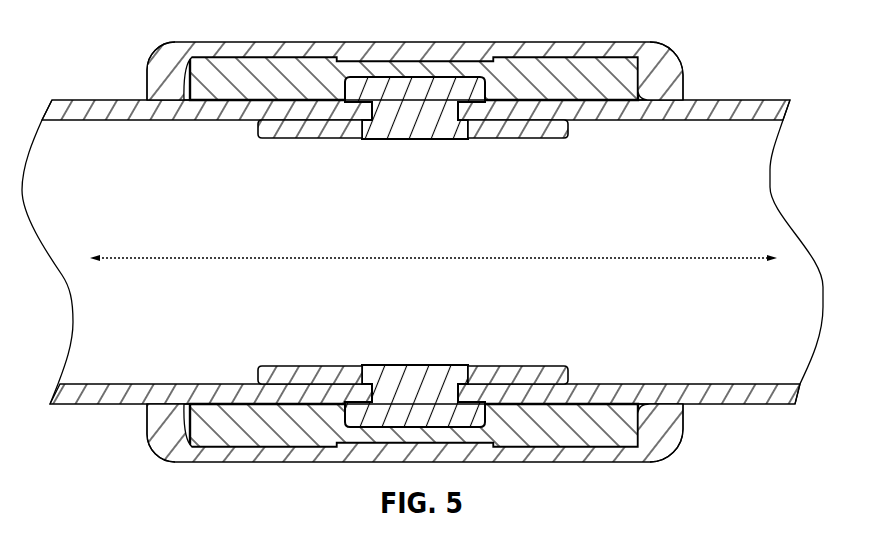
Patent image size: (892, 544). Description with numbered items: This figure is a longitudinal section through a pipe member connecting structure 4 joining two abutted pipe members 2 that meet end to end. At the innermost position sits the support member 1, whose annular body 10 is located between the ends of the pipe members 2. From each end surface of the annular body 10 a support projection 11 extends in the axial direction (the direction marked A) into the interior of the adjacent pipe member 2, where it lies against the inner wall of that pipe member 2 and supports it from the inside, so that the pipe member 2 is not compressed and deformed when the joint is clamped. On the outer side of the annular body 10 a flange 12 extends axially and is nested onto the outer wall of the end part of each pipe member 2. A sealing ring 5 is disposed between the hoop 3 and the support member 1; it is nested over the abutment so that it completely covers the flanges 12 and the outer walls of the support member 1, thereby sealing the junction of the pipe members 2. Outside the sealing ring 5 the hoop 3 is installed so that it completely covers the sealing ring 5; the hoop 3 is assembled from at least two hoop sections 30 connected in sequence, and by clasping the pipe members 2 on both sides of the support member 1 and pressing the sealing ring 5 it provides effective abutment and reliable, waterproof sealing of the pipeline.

The support member 1 is at (446, 121).
The pipe member 2 is at (92, 114).
The hoop 3 is at (157, 56).
The hoop section 30 is at (163, 61).
The pipe member connecting structure 4 is at (700, 66).
The sealing ring 5 is at (220, 84).
The annular body 10 is at (422, 108).
The support projection 11 is at (285, 133).
The flange 12 is at (357, 90).